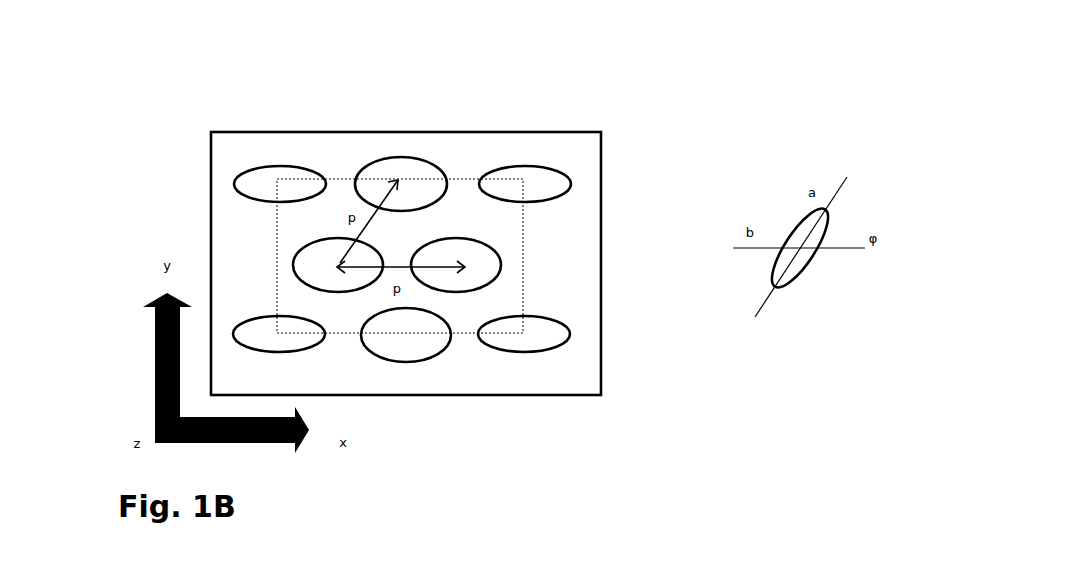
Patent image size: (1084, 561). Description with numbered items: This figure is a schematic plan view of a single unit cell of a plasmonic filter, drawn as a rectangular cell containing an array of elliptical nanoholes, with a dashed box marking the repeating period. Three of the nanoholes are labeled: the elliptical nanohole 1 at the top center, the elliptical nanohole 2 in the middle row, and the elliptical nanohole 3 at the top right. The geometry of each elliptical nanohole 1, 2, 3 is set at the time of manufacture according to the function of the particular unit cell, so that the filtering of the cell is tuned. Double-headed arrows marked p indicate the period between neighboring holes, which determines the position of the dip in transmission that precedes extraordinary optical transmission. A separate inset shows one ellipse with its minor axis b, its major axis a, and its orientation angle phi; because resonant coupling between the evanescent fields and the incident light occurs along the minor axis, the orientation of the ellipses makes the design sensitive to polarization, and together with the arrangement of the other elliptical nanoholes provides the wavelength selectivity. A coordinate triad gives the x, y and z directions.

The first elliptical lens element 1 is at (395, 158).
The second elliptical lens element 2 is at (308, 243).
The third elliptical lens element 3 is at (535, 167).